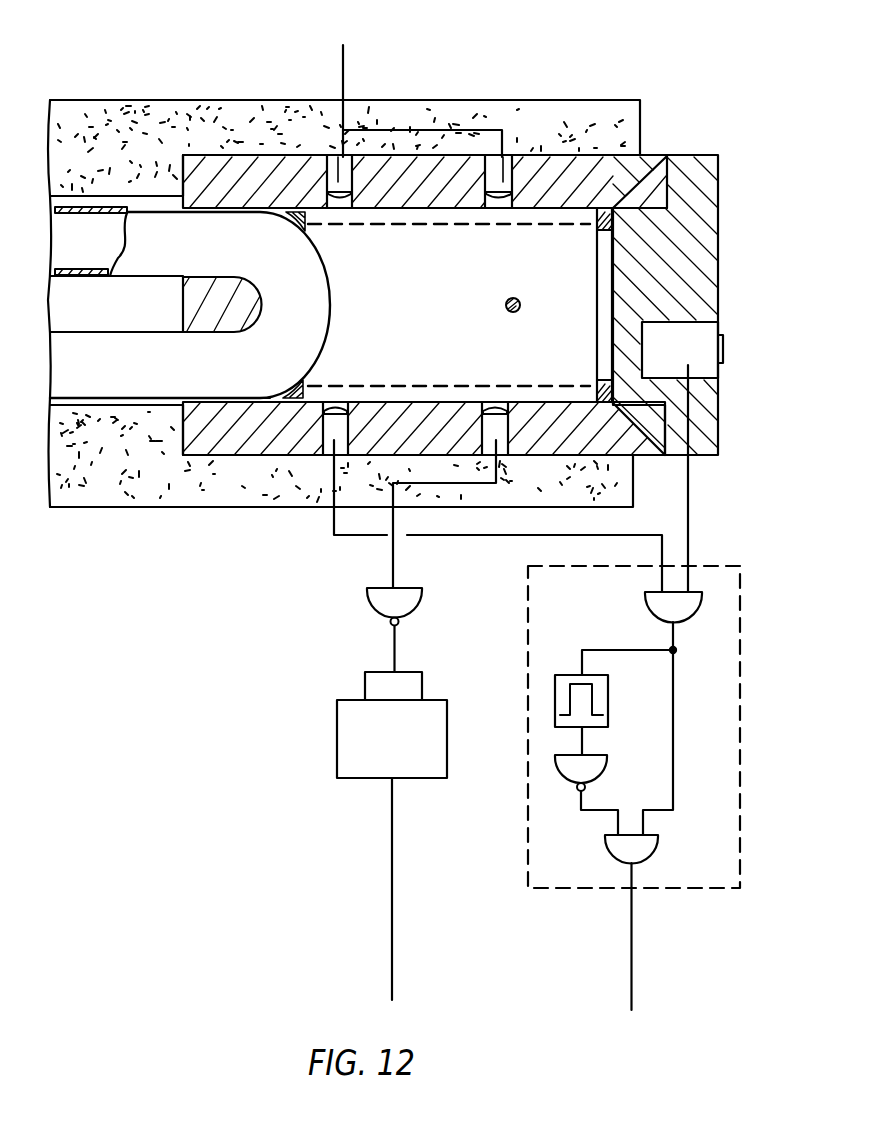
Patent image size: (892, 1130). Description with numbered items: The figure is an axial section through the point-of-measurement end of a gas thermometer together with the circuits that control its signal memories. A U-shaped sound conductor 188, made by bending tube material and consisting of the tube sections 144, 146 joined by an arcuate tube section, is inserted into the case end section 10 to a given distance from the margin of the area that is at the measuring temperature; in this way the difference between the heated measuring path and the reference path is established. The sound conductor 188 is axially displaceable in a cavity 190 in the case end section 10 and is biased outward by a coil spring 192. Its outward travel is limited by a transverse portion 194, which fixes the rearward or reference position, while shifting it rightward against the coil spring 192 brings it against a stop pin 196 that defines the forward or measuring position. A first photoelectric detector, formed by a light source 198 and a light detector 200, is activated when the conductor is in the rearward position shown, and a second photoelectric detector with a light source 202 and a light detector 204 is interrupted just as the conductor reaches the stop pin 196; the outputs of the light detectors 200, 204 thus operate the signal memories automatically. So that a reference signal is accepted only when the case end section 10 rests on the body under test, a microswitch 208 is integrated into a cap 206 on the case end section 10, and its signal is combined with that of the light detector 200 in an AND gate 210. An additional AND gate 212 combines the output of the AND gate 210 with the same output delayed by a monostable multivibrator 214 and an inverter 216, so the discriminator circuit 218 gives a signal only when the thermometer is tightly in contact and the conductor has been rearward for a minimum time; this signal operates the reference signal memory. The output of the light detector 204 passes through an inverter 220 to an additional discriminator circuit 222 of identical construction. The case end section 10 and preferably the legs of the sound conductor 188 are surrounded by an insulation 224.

The case end section 10 is at (588, 170).
The tube section 144 is at (95, 232).
The tube section 146 is at (95, 380).
The U-shaped tube 188 is at (297, 307).
The cavity 190 is at (413, 402).
The coil spring 192 is at (413, 222).
The transverse portion 194 is at (183, 308).
The stop pin 196 is at (512, 298).
The light source 198 is at (338, 182).
The light detector 200 is at (330, 440).
The light source 202 is at (502, 178).
The light detector 204 is at (485, 455).
The cap 206 is at (697, 180).
The microswitch 208 is at (662, 342).
The AND gate 210 is at (670, 607).
The additional AND gate 212 is at (632, 855).
The monostable multivibrator 214 is at (562, 697).
The inverter 216 is at (565, 768).
The discriminator circuit 218 is at (522, 880).
The inverter 220 is at (382, 605).
The additional discriminator circuit 222 is at (358, 757).
The insulation 224 is at (150, 495).